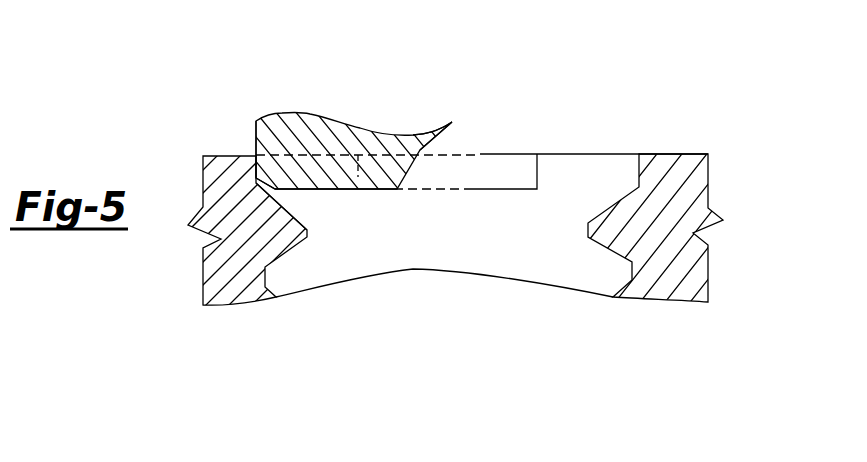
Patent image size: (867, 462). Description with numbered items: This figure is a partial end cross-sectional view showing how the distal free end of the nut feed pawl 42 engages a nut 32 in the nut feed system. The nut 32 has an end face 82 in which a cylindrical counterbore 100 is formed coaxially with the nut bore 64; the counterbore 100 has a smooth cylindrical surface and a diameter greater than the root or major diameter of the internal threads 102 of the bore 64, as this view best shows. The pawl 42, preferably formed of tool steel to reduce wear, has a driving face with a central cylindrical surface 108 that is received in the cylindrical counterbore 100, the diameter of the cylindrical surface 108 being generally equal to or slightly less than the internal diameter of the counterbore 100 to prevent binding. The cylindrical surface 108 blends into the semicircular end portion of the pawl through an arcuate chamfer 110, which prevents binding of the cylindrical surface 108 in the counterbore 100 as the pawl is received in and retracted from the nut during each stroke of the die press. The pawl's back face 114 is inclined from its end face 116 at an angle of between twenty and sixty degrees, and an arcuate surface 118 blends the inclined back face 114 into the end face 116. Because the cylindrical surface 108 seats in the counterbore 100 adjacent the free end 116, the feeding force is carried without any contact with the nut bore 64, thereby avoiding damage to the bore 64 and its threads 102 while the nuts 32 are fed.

The nut 32 is at (437, 212).
The nut feed pawl 42 is at (405, 136).
The nut bore 64 is at (577, 175).
The end face 82 is at (677, 152).
The counterbore 100 is at (405, 169).
The internal threads 102 is at (603, 252).
The cylindrical surface 108 is at (256, 133).
The arcuate chamfer 110 is at (256, 184).
The back face 114 is at (442, 143).
The end face 116 is at (347, 190).
The arcuate surface 118 is at (408, 176).